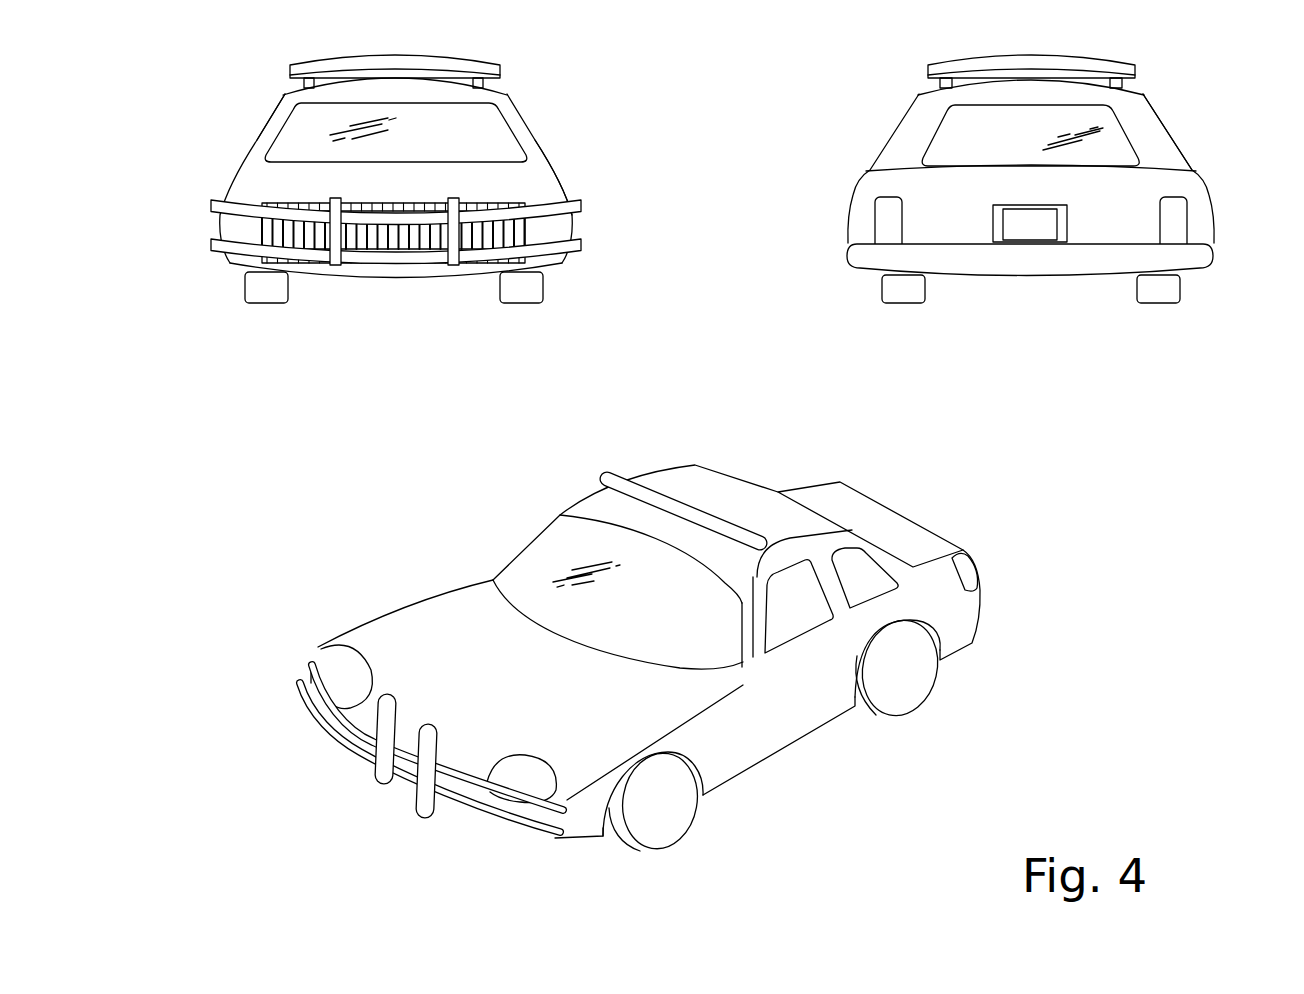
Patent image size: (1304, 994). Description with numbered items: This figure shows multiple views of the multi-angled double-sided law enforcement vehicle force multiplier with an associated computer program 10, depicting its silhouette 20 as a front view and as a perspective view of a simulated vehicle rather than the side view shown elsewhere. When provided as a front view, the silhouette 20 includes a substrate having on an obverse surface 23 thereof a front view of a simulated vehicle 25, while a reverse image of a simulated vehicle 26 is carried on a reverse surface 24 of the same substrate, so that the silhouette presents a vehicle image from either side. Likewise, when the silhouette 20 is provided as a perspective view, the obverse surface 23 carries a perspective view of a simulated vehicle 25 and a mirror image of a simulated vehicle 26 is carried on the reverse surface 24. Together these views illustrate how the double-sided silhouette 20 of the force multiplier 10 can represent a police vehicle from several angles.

The multi-angled double-sided law enforcement vehicle force multiplier with an assoc 10 is at (712, 447).
The silhouette 20 is at (712, 515).
The obverse surface 23 is at (540, 183).
The reverse surface 24 is at (273, 118).
The front view of a simulated vehicle 25 is at (873, 261).
The reverse image of a simulated vehicle 26 is at (1155, 110).